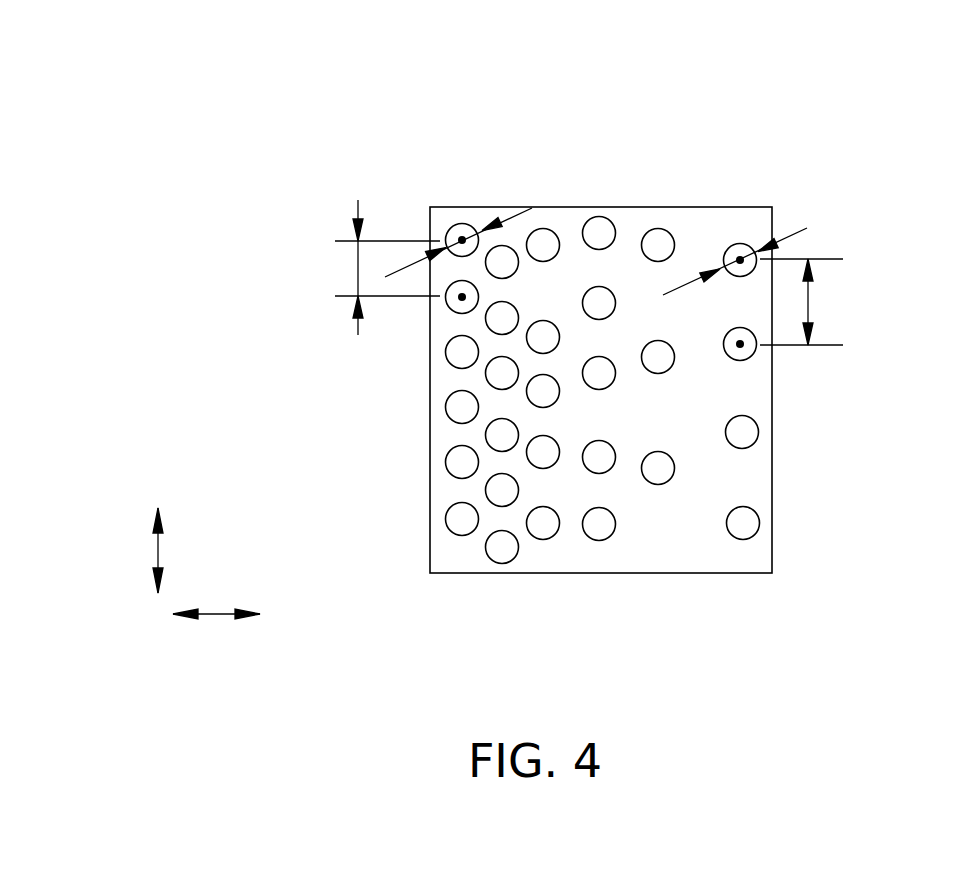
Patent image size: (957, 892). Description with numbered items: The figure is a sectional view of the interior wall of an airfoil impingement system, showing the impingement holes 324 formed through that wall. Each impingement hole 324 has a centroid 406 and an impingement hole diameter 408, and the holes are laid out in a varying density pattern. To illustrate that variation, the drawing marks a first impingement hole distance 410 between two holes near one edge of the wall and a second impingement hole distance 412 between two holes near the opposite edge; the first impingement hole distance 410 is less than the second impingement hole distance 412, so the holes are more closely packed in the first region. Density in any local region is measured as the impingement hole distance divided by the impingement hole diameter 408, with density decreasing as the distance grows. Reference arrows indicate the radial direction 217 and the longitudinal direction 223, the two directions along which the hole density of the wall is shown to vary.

The impingement holes 324 is at (448, 230).
The centroid 406 is at (462, 240).
The impingement hole diameter 408 is at (464, 235).
The first impingement hole distance 410 is at (358, 265).
The second impingement hole distance 412 is at (808, 300).
The radial direction 217 is at (158, 548).
The longitudinal direction 223 is at (216, 614).